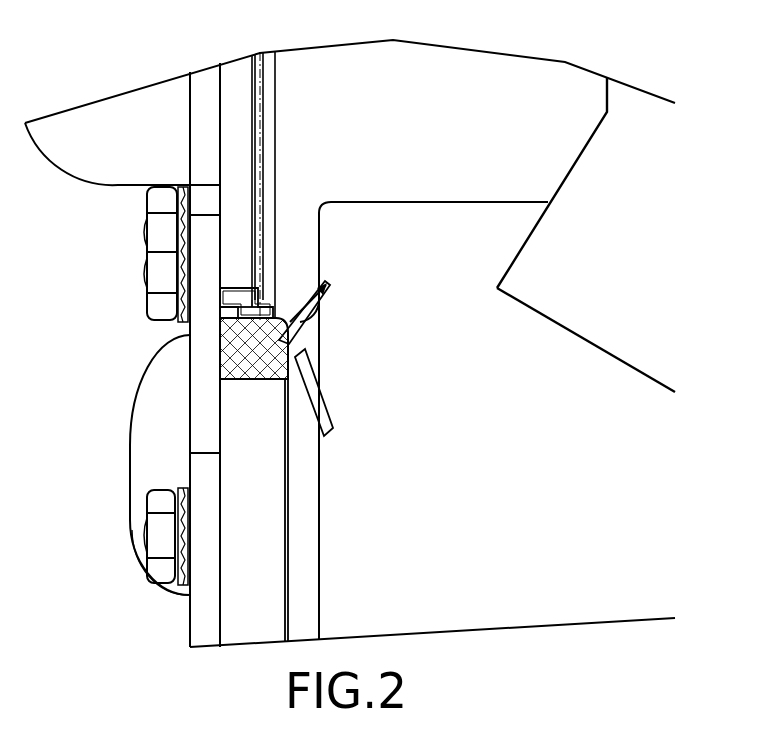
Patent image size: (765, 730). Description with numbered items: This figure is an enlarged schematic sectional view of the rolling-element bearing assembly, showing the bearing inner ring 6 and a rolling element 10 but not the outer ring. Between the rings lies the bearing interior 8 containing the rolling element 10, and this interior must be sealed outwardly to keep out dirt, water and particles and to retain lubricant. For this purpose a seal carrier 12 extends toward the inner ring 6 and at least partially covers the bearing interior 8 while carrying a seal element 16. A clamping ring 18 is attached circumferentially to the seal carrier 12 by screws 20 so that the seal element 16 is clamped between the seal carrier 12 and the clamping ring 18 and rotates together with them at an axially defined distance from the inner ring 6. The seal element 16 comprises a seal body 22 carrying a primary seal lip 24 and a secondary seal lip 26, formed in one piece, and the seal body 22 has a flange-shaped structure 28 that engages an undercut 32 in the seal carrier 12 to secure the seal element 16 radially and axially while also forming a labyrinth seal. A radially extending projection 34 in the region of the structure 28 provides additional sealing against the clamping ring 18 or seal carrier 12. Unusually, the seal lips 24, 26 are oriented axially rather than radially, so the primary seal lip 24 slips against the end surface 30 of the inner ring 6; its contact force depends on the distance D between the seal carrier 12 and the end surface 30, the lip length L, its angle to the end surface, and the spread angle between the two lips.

The inner ring 6 is at (635, 522).
The bearing interior 8 is at (412, 128).
The rolling elements 10 is at (632, 224).
The seal carrier 12 is at (231, 100).
The seal element 16 is at (270, 372).
The clamping ring 18 is at (207, 380).
The screws 20 is at (158, 274).
The seal body 22 is at (240, 350).
The primary seal lip 24 is at (327, 283).
The secondary seal lip 26 is at (297, 362).
The structure 28 is at (238, 300).
The end surface 30 is at (322, 235).
The undercut 32 is at (258, 295).
The radially extending projection 34 is at (242, 297).
The distance D is at (277, 255).
The length L is at (237, 322).